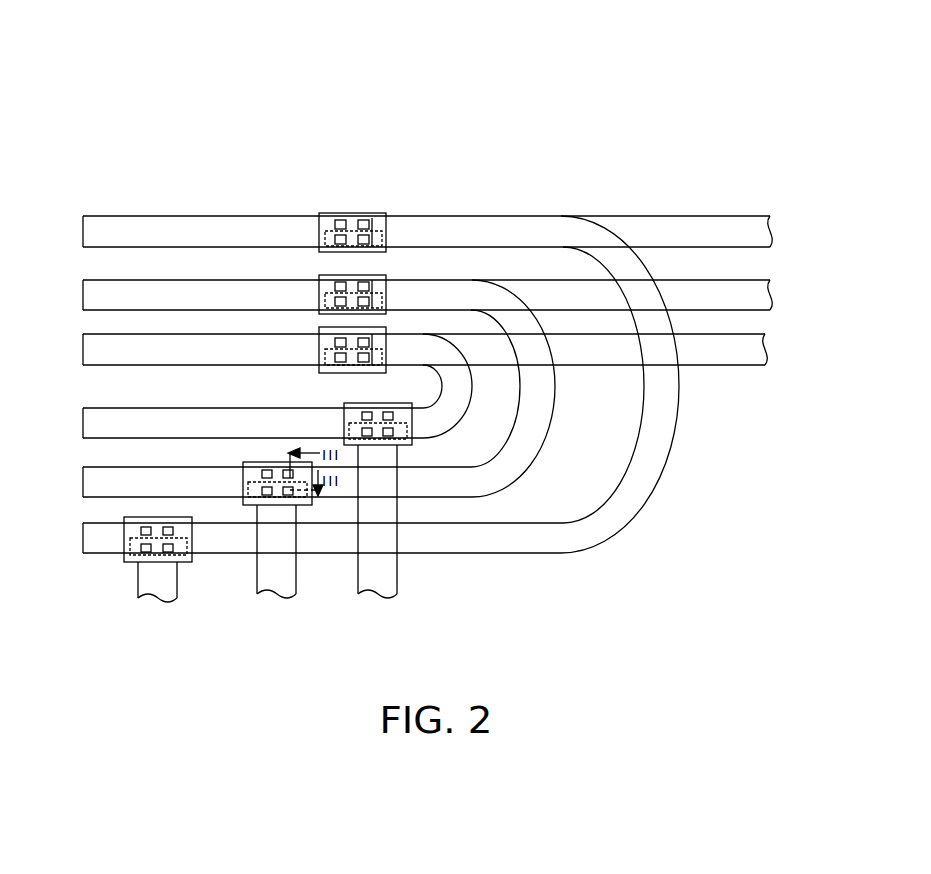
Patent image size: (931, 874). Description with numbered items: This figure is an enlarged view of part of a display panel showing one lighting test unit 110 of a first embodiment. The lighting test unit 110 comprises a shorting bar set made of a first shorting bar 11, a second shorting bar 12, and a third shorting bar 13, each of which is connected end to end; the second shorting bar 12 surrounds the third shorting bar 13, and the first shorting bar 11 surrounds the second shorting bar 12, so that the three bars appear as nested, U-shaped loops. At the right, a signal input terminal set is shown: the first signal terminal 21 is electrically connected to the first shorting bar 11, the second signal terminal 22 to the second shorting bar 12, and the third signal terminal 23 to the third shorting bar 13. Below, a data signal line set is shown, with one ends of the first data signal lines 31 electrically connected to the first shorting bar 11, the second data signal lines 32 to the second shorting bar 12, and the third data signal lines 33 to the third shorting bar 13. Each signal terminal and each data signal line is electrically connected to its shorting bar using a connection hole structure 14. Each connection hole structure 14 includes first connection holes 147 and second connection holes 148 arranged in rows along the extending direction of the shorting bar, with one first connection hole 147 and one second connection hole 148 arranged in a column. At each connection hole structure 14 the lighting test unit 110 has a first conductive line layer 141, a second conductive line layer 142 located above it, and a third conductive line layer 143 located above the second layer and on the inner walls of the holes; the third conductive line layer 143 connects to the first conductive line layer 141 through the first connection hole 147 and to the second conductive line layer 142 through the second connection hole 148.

The lighting test unit 110 is at (452, 30).
The first shorting bar 11 is at (185, 230).
The second shorting bar 12 is at (123, 292).
The third shorting bar 13 is at (218, 349).
The connection hole structure 14 is at (290, 386).
The first conductive line layer 141 is at (327, 213).
The second conductive line layer 142 is at (380, 237).
The third conductive line layer 143 is at (353, 213).
The first connection hole 147 is at (143, 533).
The second connection hole 148 is at (147, 548).
The first signal terminal 21 is at (688, 232).
The second signal terminal 22 is at (740, 292).
The third signal terminal 23 is at (755, 353).
The first data signal line 31 is at (157, 582).
The second data signal line 32 is at (275, 573).
The third data signal line 33 is at (378, 573).